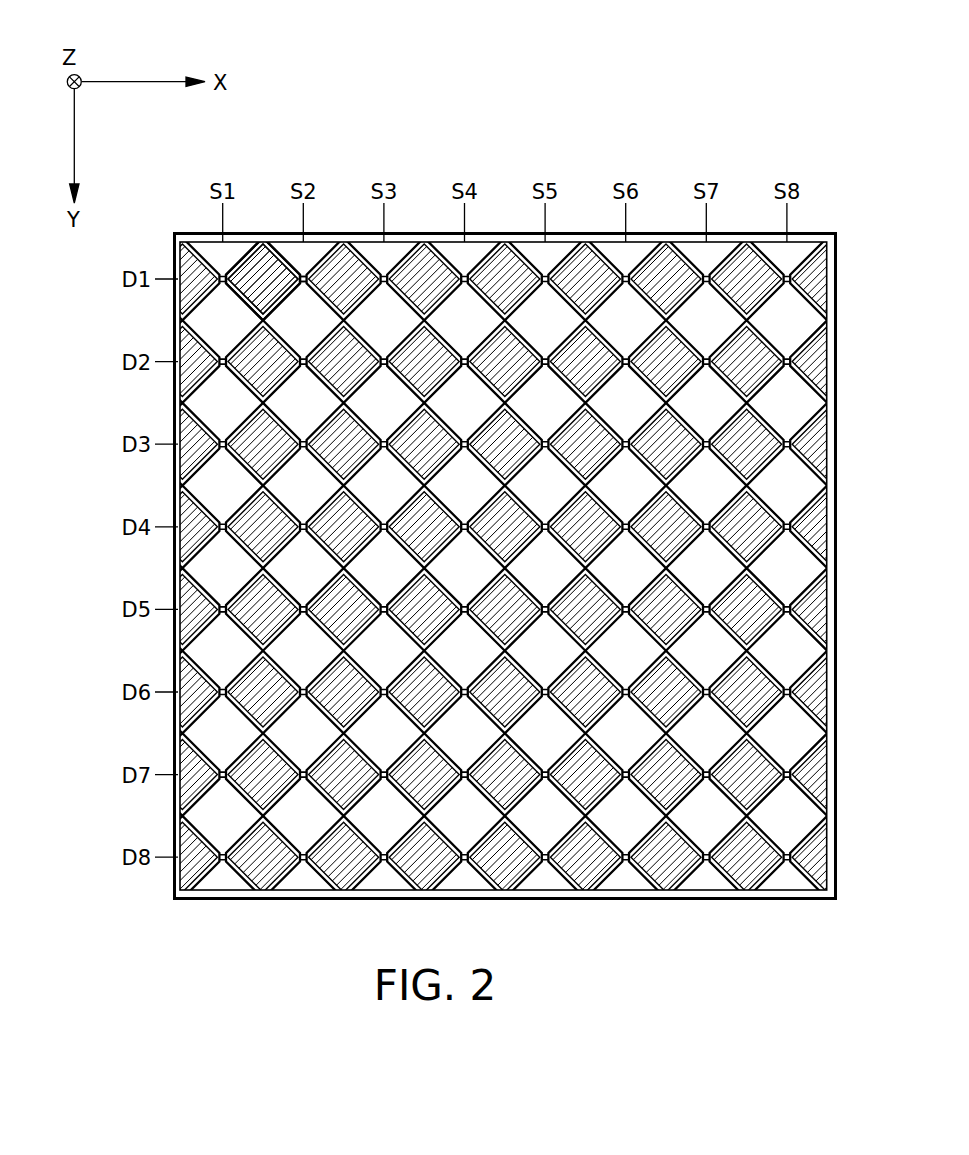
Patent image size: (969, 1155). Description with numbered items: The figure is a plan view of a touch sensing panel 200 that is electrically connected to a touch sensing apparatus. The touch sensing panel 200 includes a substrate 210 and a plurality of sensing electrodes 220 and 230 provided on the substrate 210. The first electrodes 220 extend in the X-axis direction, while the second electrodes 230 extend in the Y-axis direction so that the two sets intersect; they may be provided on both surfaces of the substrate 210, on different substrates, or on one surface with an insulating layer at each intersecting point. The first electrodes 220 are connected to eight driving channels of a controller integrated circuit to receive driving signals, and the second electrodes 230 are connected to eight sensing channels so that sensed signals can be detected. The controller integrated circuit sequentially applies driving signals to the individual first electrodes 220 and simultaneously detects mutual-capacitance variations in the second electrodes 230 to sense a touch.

The touch sensing panel 200 is at (613, 133).
The substrate 210 is at (177, 232).
The first electrodes 220 is at (180, 297).
The second electrodes 230 is at (237, 243).